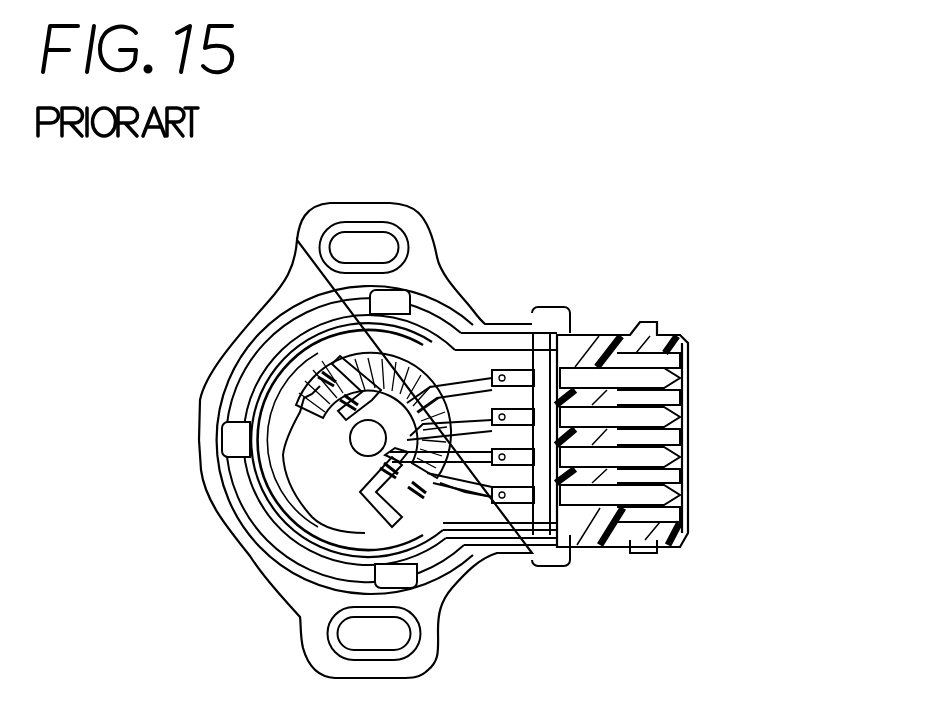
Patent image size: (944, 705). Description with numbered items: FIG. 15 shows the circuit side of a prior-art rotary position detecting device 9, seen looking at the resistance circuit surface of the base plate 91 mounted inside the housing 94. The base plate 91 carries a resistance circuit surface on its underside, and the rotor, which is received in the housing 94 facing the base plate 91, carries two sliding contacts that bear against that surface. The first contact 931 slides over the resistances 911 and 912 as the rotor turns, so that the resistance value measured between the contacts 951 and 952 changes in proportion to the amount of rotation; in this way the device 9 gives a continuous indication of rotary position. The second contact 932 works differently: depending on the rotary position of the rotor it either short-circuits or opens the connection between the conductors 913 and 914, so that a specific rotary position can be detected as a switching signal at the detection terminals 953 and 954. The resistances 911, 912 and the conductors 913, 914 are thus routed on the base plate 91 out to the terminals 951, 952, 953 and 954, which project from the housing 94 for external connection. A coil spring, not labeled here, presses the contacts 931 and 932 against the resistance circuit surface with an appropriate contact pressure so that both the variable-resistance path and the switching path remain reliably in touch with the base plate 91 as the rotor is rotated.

The rotary position detecting device 9 is at (446, 388).
The base plate 91 is at (296, 440).
The resistance 911 is at (475, 333).
The resistance 912 is at (442, 348).
The conductor 913 is at (241, 484).
The conductor 914 is at (492, 567).
The first contact 931 is at (241, 349).
The second contact 932 is at (273, 521).
The housing 94 is at (369, 440).
The contact 951 is at (651, 368).
The contact 952 is at (654, 410).
The detection terminal 953 is at (654, 452).
The detection terminal 954 is at (655, 494).